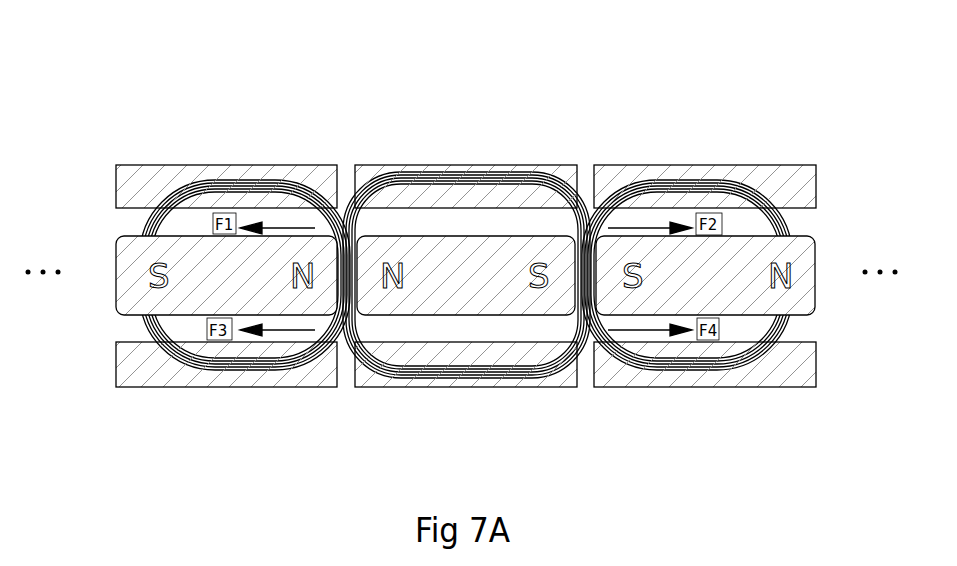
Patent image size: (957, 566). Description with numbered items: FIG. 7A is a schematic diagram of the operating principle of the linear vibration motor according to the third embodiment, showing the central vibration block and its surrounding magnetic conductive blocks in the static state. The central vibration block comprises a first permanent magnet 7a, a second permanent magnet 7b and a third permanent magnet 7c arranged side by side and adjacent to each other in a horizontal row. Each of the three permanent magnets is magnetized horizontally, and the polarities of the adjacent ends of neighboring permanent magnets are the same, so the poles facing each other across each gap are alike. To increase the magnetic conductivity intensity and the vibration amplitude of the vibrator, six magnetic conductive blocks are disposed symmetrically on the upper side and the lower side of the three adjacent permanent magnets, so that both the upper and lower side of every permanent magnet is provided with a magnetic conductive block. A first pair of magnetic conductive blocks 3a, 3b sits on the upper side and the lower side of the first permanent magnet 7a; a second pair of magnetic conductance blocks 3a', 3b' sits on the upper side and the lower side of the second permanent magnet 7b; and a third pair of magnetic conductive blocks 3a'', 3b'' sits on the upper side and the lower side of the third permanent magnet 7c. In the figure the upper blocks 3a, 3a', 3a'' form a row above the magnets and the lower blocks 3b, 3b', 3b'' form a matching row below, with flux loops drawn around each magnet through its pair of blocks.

The first permanent magnet 7a is at (245, 187).
The second permanent magnet 7b is at (466, 190).
The third permanent magnet 7c is at (687, 186).
The magnetic conductive block 3a is at (248, 108).
The magnetic conductance block 3a' is at (493, 105).
The magnetic conductive block 3a'' is at (737, 105).
The magnetic conductive block 3b is at (226, 421).
The magnetic conductance block 3b' is at (466, 421).
The magnetic conductive block 3b'' is at (705, 419).